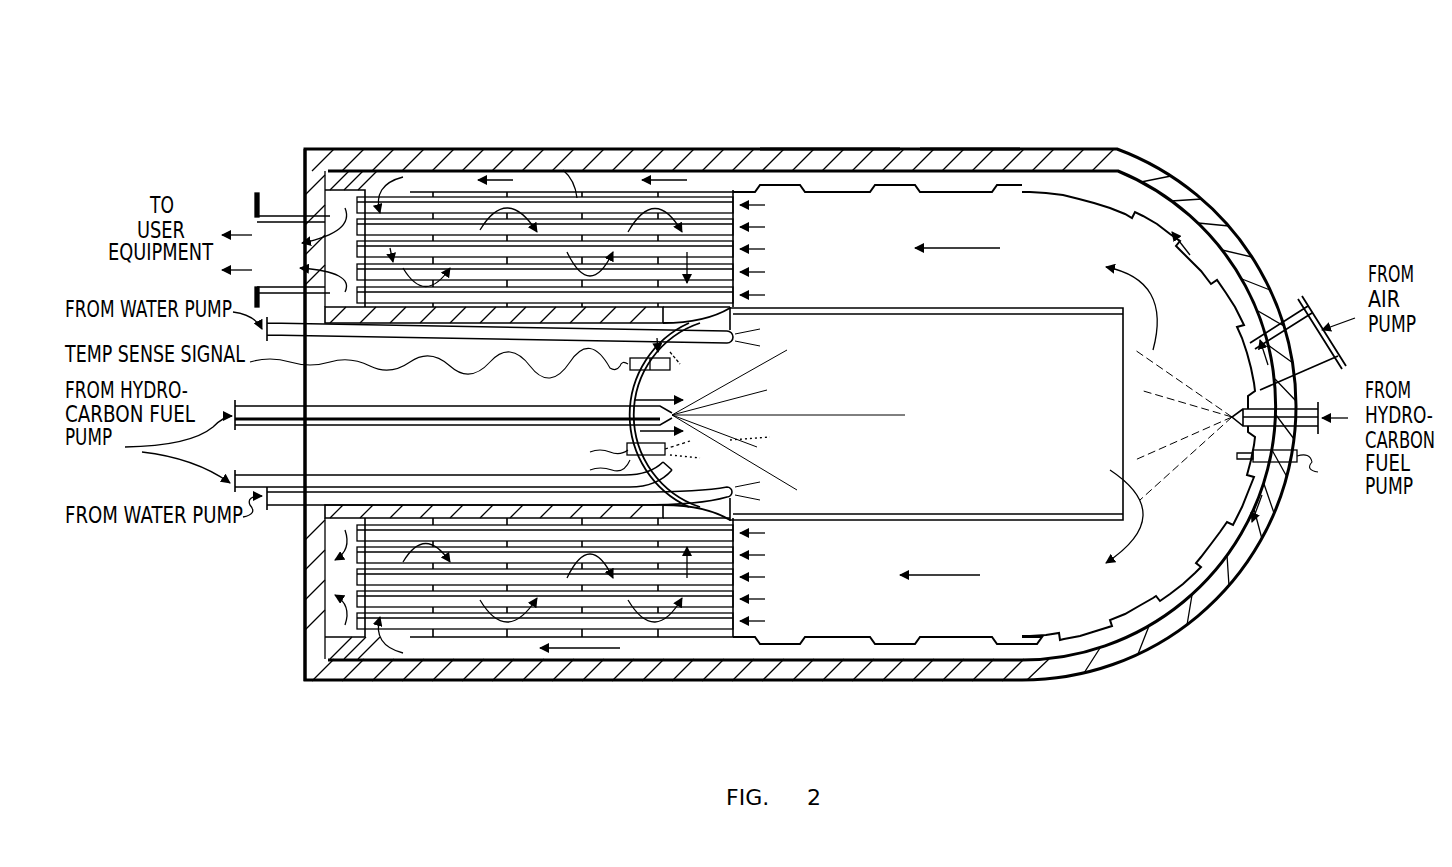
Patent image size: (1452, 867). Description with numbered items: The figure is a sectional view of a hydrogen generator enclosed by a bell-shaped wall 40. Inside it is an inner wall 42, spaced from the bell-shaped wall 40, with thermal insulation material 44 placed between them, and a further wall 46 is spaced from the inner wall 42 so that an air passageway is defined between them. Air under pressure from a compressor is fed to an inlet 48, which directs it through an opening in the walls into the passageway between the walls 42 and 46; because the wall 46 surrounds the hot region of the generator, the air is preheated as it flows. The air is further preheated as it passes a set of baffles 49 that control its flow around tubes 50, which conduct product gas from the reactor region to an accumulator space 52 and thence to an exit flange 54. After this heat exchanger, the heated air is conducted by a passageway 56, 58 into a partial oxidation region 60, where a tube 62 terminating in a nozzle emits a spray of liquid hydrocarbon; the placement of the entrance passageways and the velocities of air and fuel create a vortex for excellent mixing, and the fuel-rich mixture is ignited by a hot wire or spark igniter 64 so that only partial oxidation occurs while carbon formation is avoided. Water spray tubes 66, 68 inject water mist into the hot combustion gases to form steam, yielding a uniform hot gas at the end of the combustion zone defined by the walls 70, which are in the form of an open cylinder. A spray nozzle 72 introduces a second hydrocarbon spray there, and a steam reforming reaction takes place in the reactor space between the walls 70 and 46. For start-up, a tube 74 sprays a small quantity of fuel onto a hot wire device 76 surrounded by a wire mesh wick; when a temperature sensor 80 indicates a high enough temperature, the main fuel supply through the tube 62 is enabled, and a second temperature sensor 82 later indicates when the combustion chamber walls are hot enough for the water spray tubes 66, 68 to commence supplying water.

The bell-shaped wall 40 is at (880, 150).
The inner wall 42 is at (807, 172).
The thermal insulation material 44 is at (955, 160).
The wall 46 is at (870, 197).
The inlet 48 is at (1290, 322).
The baffles 49 is at (573, 195).
The tubes 50 is at (745, 271).
The accumulator space 52 is at (343, 200).
The exit flange 54 is at (277, 213).
The passageway 56 is at (636, 358).
The passageway 58 is at (627, 446).
The partial oxidation region 60 is at (817, 406).
The tube 62 is at (382, 410).
The igniter 64 is at (672, 447).
The water spray tube 66 is at (378, 338).
The water spray tube 68 is at (362, 490).
The walls 70 is at (943, 308).
The spray nozzle 72 is at (1240, 407).
The tube 74 is at (470, 492).
The hot wire device 76 is at (797, 490).
The temperature sensor 80 is at (672, 364).
The temperature sensor 82 is at (1245, 456).